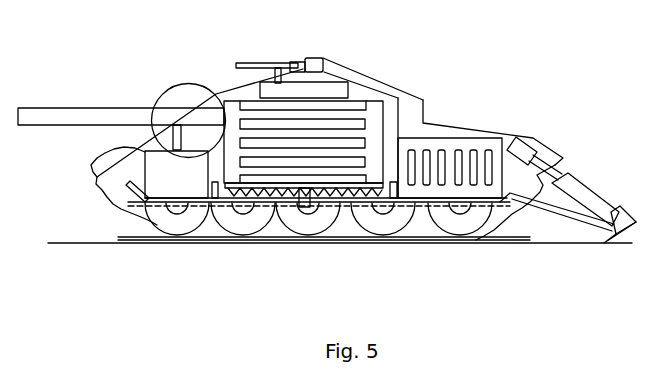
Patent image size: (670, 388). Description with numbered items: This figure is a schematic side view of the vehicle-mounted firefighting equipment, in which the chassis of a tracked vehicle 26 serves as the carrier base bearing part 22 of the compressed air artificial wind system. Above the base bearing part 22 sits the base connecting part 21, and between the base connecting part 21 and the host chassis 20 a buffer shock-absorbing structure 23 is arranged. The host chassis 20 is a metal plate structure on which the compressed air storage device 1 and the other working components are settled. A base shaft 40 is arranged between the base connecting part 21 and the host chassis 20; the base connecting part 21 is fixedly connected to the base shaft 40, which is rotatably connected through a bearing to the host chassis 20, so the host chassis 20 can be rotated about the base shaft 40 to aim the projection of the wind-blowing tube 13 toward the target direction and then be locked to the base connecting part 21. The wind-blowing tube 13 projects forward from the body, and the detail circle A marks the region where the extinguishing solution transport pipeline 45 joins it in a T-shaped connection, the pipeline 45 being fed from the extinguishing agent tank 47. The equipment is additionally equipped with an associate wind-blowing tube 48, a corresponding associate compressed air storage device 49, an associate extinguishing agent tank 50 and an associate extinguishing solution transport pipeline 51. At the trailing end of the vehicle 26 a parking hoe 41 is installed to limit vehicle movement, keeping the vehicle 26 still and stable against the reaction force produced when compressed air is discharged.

The compressed air storage device 1 is at (332, 135).
The wind-blowing tube 13 is at (33, 118).
The detail region A is at (156, 99).
The host chassis 20 is at (348, 184).
The base connecting part 21 is at (257, 203).
The base bearing part 22 is at (468, 208).
The buffer shock-absorbing structure 23 is at (380, 190).
The vehicle 26 is at (143, 212).
The base shaft 40 is at (305, 201).
The parking hoe 41 is at (608, 242).
The extinguishing solution transport pipeline 45 is at (177, 128).
The extinguishing agent tank 47 is at (173, 185).
The associate wind-blowing tube 48 is at (246, 65).
The associate compressed air storage device 49 is at (433, 167).
The associate extinguishing agent tank 50 is at (335, 90).
The associate extinguishing solution transport pipeline 51 is at (287, 64).